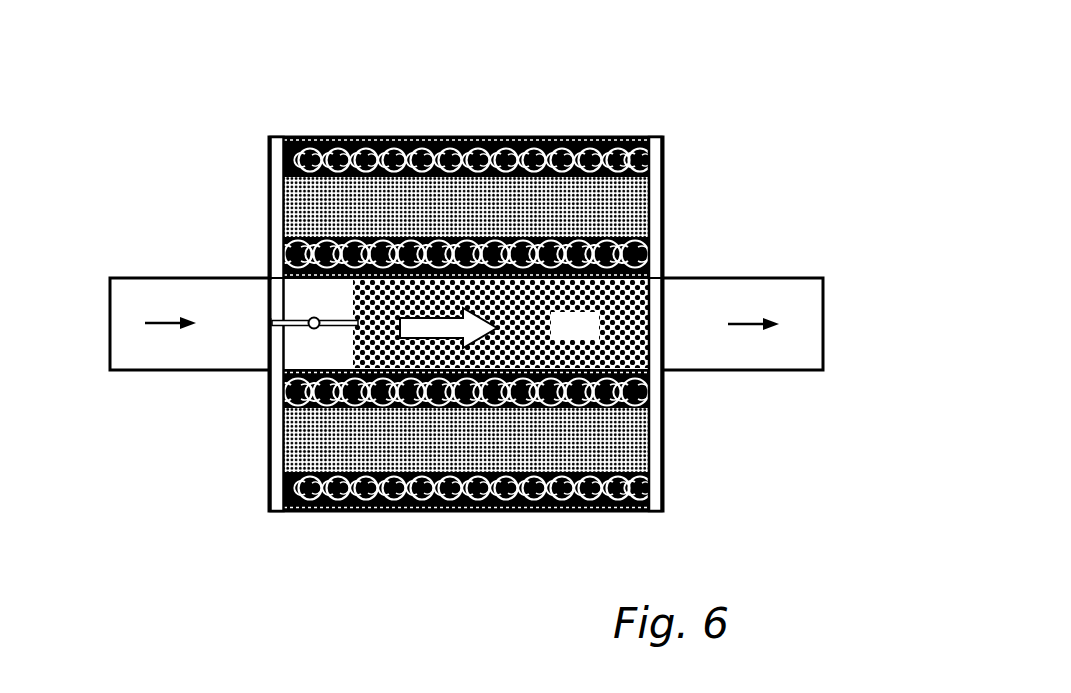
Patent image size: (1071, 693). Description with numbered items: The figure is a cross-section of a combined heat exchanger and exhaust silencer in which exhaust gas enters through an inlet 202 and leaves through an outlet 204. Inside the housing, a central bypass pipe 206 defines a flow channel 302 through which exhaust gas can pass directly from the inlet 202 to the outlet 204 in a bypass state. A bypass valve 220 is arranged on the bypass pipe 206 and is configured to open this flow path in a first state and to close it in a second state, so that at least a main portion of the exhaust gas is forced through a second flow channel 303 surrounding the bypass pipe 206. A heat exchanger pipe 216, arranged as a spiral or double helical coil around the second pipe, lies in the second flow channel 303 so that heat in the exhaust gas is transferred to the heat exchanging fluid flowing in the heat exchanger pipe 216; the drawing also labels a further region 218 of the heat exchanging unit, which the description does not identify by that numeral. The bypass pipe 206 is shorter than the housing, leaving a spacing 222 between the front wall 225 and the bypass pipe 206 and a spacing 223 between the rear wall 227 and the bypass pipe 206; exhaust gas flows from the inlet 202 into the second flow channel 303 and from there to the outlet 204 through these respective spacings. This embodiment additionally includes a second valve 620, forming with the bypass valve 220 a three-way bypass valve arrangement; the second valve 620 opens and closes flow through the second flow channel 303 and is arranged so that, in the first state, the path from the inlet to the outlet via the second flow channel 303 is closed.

The inlet 202 is at (143, 297).
The outlet 204 is at (758, 353).
The bypass pipe 206 is at (335, 312).
The heat exchanger pipe 216 is at (333, 504).
The insulation / filter material 218 is at (647, 442).
The bypass valve 220 is at (282, 332).
The spacing 222 is at (266, 278).
The spacing 223 is at (662, 304).
The front wall 225 is at (268, 485).
The rear wall 227 is at (665, 387).
The flow channel 302 is at (596, 337).
The second flow channel 303 is at (592, 142).
The second valve 620 is at (277, 300).